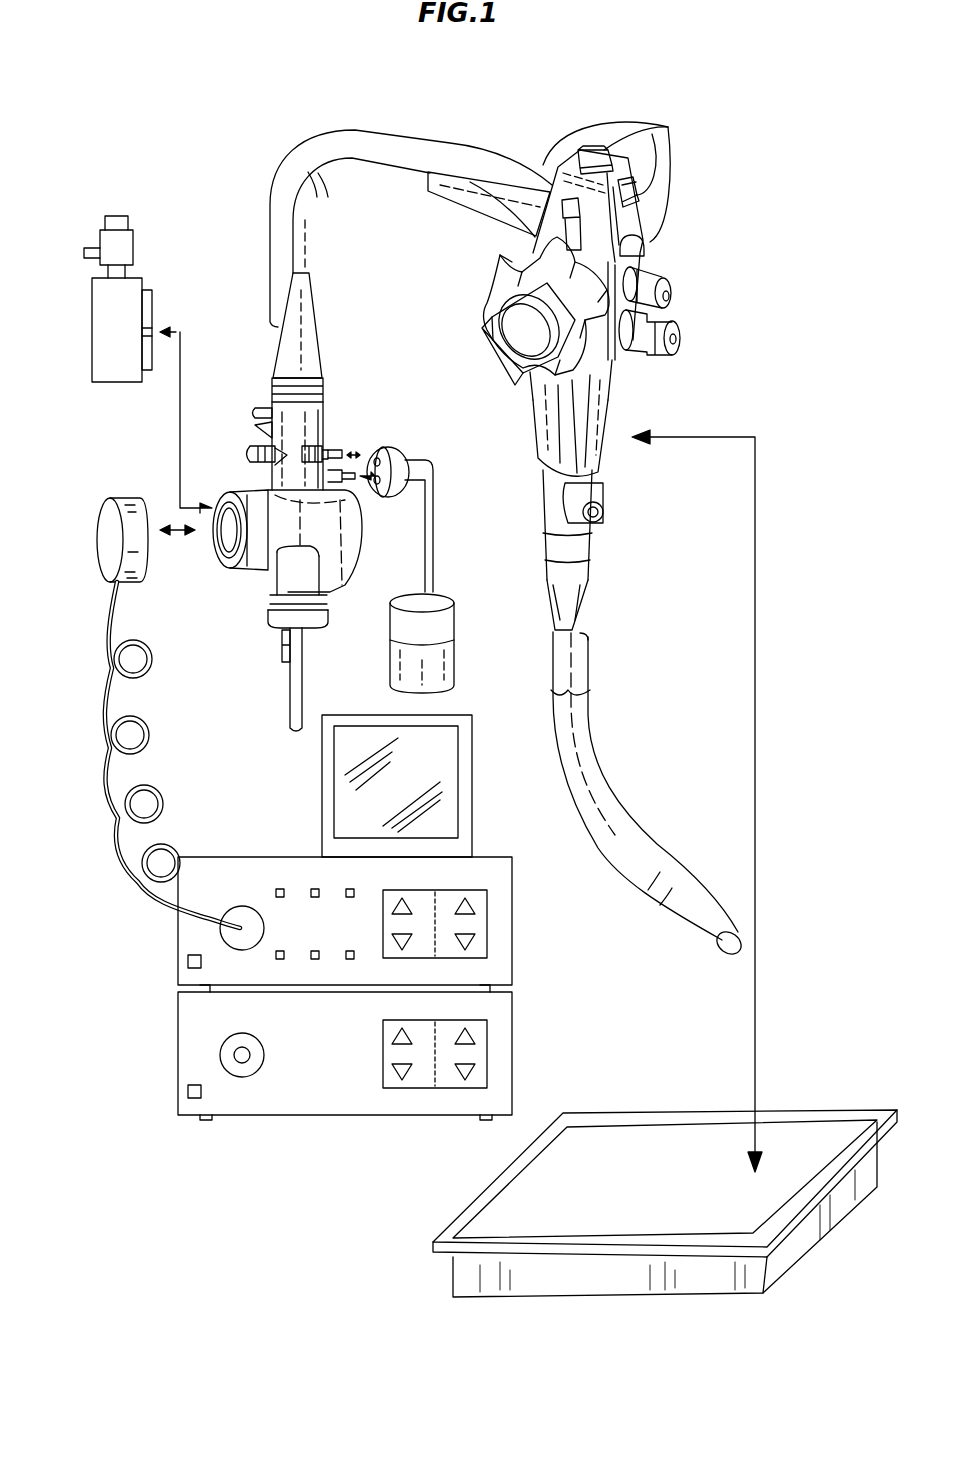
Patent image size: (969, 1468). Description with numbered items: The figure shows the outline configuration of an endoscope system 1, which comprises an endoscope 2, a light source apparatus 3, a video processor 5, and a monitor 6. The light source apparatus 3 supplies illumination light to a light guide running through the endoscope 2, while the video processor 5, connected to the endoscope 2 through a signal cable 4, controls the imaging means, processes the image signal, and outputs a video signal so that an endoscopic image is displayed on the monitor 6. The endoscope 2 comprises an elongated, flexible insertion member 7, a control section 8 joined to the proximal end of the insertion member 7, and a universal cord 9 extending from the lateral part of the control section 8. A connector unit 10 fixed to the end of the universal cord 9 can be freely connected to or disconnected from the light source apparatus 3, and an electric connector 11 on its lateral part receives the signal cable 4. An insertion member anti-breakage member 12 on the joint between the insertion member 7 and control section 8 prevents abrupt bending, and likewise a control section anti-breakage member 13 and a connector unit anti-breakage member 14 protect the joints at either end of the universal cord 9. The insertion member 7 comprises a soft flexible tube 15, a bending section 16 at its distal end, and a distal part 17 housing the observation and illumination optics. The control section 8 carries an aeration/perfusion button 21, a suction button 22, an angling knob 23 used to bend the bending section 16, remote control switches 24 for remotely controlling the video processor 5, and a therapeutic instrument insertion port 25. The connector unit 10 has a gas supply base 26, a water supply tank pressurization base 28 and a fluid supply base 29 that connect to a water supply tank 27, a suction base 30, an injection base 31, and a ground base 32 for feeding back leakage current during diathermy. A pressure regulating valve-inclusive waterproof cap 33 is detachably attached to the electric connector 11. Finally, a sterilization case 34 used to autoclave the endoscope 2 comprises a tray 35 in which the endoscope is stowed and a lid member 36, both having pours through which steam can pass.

The endoscope system 1 is at (692, 246).
The endoscope 2 is at (648, 380).
The light source apparatus 3 is at (178, 1048).
The signal cable 4 is at (163, 740).
The video processor 5 is at (178, 938).
The monitor 6 is at (475, 803).
The insertion member 7 is at (618, 840).
The control section 8 is at (610, 412).
The universal cord 9 is at (450, 143).
The connector unit 10 is at (332, 578).
The electric connector 11 is at (228, 575).
The insertion member anti-breakage member 12 is at (580, 605).
The control section anti-breakage member 13 is at (480, 212).
The connector unit anti-breakage member 14 is at (285, 355).
The flexible tube 15 is at (602, 858).
The bending section 16 is at (668, 920).
The distal part 17 is at (720, 955).
The aeration/perfusion button 21 is at (684, 340).
The suction button 22 is at (675, 297).
The angling knob 23 is at (490, 302).
The remote control switches 24 is at (650, 132).
The therapeutic instrument insertion port 25 is at (604, 513).
The gas supply base 26 is at (286, 648).
The water supply tank 27 is at (395, 668).
The water supply tank pressurization base 28 is at (340, 452).
The fluid supply base 29 is at (350, 485).
The suction base 30 is at (258, 448).
The injection base 31 is at (262, 408).
The ground base 32 is at (326, 440).
The pressure regulating valve-inclusive waterproof cap 33 is at (145, 290).
The sterilization case 34 is at (665, 1179).
The tray 35 is at (805, 1260).
The lid member 36 is at (650, 1160).